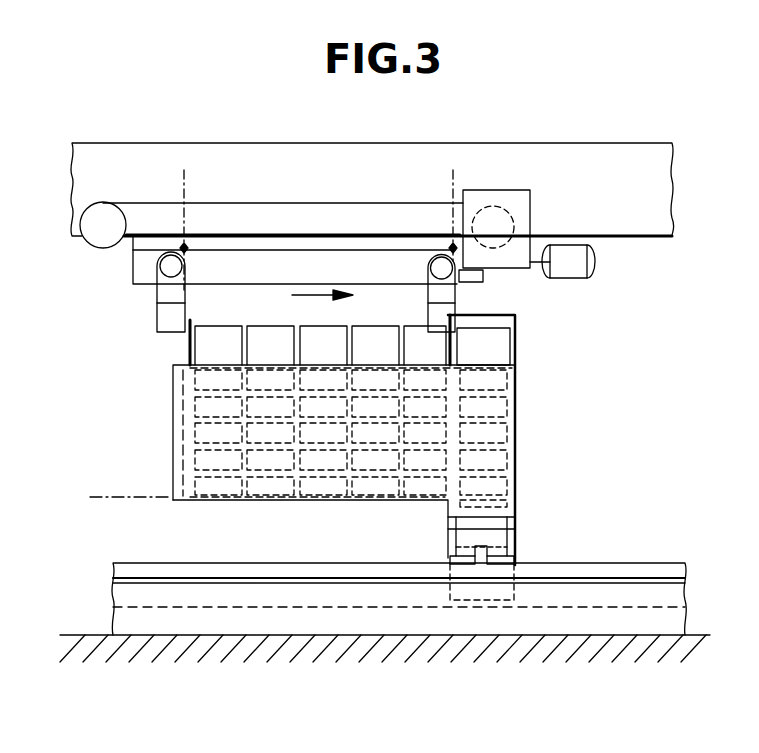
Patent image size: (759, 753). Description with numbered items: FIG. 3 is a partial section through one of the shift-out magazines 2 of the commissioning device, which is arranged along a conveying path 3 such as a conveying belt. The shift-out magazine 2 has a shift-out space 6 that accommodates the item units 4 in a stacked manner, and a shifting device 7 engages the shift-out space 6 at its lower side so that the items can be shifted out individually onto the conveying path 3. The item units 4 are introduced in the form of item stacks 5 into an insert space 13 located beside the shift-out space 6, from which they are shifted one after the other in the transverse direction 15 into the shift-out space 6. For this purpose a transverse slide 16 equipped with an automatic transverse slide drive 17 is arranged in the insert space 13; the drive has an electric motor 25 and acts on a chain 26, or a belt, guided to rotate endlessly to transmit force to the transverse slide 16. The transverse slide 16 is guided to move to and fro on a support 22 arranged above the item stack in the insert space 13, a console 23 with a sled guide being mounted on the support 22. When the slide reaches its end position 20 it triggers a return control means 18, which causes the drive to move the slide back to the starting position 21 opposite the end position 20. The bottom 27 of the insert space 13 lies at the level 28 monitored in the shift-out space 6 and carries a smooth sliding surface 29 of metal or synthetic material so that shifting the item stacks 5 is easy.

The shift-out magazine 2 is at (173, 418).
The conveying path 3 is at (612, 608).
The item units 4 is at (510, 497).
The item stack 5 is at (543, 370).
The shift-out space 6 is at (515, 535).
The shifting device 7 is at (514, 555).
The insert space 13 is at (188, 500).
The transverse direction 15 is at (322, 297).
The transverse slide 16 is at (188, 352).
The transverse slide drive 17 is at (527, 212).
The return control means 18 is at (485, 278).
The end position 20 is at (455, 187).
The starting position 21 is at (186, 172).
The support 22 is at (657, 207).
The console 23 is at (150, 272).
The electric motor 25 is at (585, 268).
The chain 26 is at (273, 250).
The bottom 27 is at (283, 503).
The level 28 is at (143, 498).
The smooth sliding surface 29 is at (172, 493).